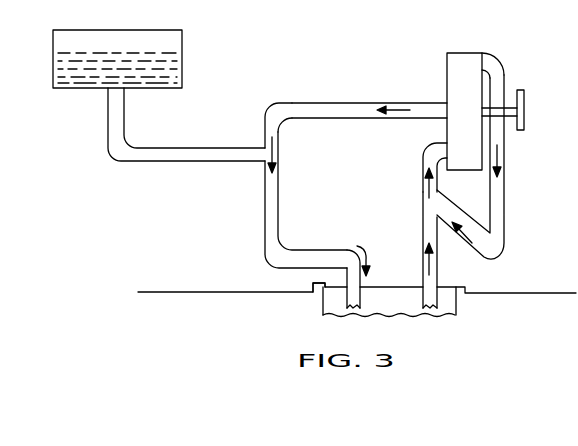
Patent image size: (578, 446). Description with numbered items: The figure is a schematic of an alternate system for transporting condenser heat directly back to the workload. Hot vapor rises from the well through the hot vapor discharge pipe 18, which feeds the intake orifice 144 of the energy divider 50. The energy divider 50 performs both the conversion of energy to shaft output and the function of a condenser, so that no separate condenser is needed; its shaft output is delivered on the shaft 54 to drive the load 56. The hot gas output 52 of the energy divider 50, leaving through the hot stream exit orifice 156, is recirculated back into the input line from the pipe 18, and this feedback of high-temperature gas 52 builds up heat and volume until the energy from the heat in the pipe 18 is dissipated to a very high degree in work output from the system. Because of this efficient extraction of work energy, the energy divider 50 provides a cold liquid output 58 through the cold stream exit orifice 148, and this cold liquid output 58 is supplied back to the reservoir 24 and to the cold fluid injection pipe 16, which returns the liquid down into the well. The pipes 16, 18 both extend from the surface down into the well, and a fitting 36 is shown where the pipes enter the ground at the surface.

The reservoir 24 is at (128, 30).
The cold liquid output 58 is at (374, 102).
The cold stream exit orifice 148 is at (446, 103).
The energy divider 50 is at (446, 78).
The intake orifice 144 is at (446, 143).
The hot vapor discharge pipe 18 is at (437, 257).
The cold fluid injection pipe 16 is at (362, 280).
The sump fitting 36 is at (318, 284).
The hot stream exit orifice 156 is at (482, 53).
The hot gas output 52 is at (504, 70).
The shaft 54 is at (512, 119).
The load 56 is at (525, 108).